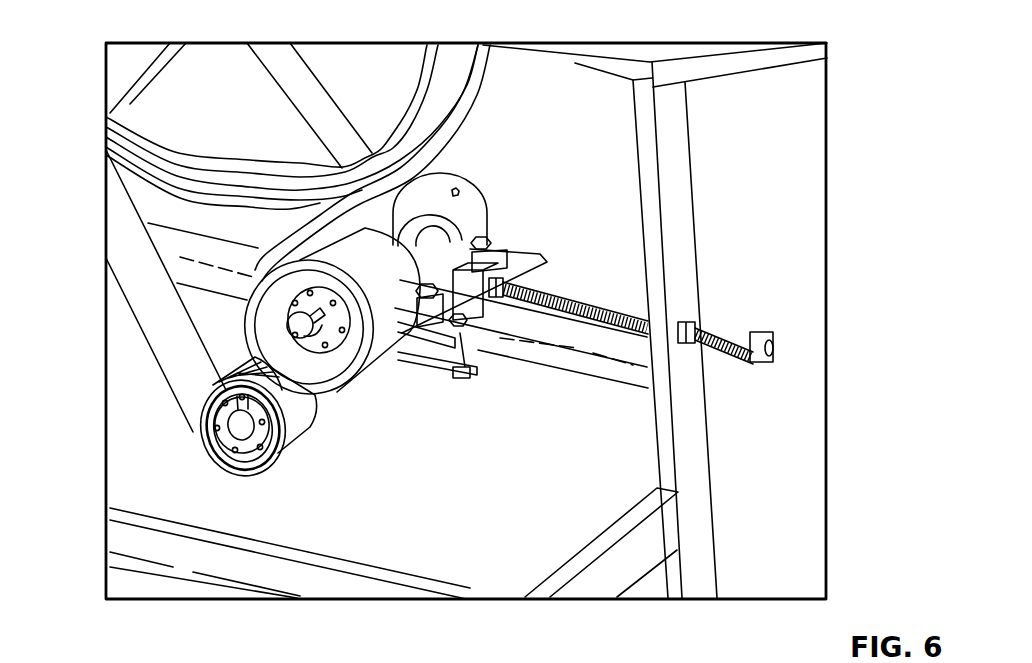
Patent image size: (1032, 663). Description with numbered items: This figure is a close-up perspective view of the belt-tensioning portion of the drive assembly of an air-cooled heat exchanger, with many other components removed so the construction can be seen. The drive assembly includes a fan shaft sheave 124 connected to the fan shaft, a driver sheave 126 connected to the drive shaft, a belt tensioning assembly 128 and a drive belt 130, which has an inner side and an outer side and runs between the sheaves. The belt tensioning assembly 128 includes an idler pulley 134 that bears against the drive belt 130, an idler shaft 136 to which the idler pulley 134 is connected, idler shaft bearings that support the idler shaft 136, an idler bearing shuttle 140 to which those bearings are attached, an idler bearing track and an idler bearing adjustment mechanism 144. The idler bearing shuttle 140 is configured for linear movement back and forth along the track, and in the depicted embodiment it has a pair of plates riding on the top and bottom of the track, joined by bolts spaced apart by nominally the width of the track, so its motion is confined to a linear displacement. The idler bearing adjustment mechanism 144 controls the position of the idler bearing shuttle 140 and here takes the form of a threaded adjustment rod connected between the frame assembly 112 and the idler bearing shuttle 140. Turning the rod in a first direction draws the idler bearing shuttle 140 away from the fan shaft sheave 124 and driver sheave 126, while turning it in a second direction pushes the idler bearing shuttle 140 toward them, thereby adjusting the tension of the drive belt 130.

The frame assembly 112 is at (698, 458).
The fan shaft sheave 124 is at (157, 153).
The driver sheave 126 is at (223, 437).
The belt tensioning assembly 128 is at (457, 414).
The drive belt 130 is at (167, 345).
The idler pulley 134 is at (385, 330).
The idler shaft 136 is at (307, 337).
The idler bearing shuttle 140 is at (522, 237).
The idler bearing adjustment mechanism 144 is at (611, 271).